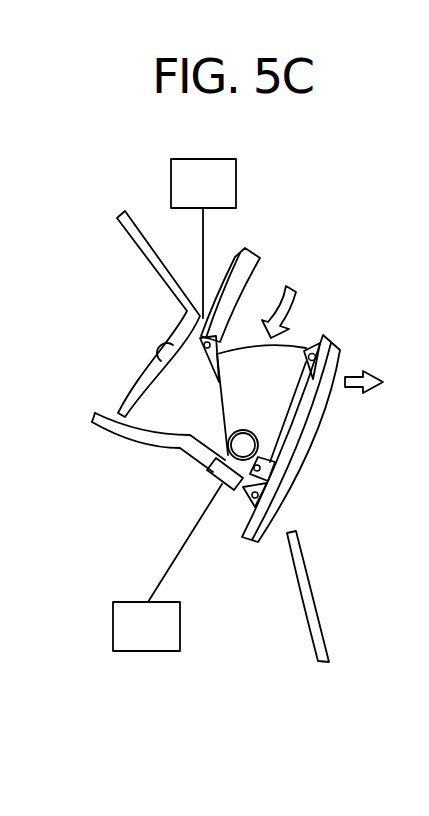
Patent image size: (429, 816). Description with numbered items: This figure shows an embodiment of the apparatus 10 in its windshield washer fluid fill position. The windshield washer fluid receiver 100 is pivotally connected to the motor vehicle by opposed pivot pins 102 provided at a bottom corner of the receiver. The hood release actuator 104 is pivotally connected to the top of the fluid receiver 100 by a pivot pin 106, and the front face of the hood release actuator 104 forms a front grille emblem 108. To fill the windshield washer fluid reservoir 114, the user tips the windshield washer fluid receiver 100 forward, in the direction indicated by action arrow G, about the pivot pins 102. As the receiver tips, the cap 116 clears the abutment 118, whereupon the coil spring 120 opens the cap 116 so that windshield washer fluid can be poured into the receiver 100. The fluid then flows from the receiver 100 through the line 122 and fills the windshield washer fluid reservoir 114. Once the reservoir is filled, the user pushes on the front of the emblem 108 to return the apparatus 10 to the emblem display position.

The apparatus 10 is at (339, 233).
The windshield washer fluid receiver 100 is at (237, 402).
The pivot pins 102 is at (243, 482).
The hood release actuator 104 is at (297, 452).
The pivot pin 106 is at (312, 353).
The front grille emblem 108 is at (324, 410).
The windshield washer fluid reservoir 114 is at (170, 632).
The cap 116 is at (223, 262).
The abutment 118 is at (153, 362).
The coil spring 120 is at (171, 187).
The line 122 is at (186, 537).
The action arrow G is at (362, 372).